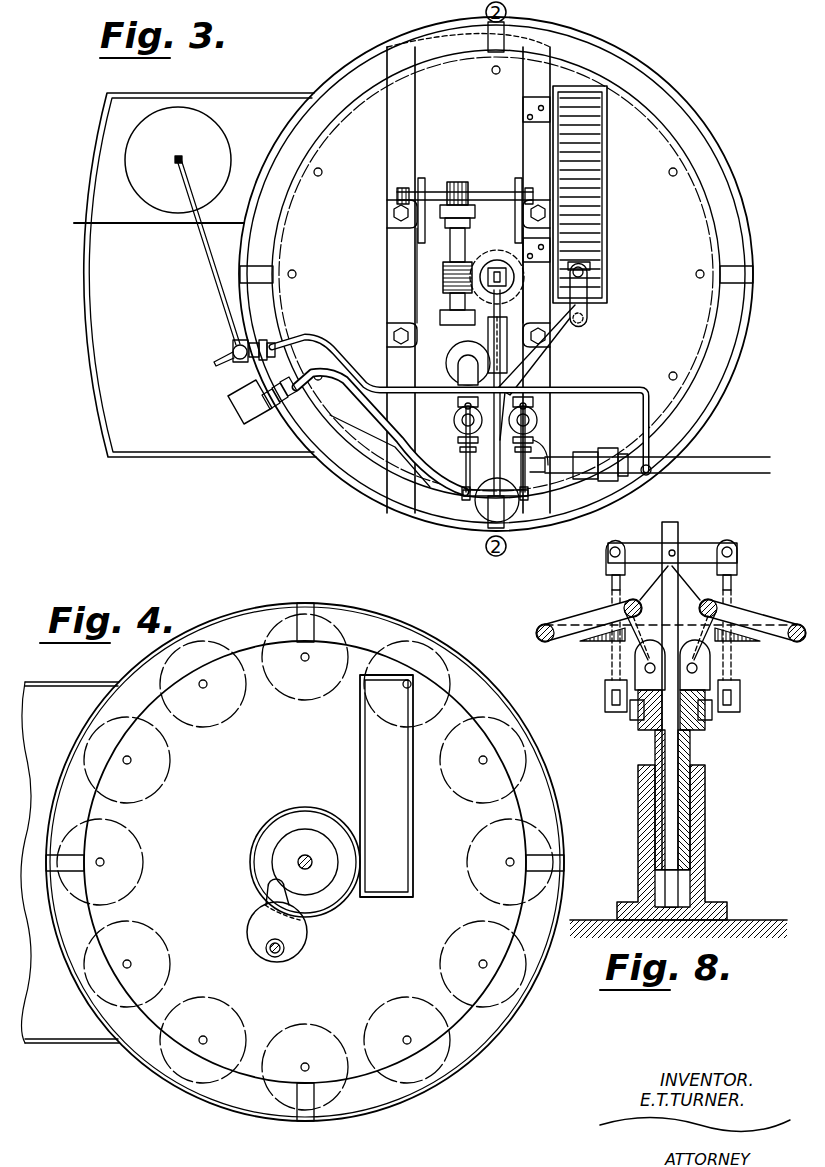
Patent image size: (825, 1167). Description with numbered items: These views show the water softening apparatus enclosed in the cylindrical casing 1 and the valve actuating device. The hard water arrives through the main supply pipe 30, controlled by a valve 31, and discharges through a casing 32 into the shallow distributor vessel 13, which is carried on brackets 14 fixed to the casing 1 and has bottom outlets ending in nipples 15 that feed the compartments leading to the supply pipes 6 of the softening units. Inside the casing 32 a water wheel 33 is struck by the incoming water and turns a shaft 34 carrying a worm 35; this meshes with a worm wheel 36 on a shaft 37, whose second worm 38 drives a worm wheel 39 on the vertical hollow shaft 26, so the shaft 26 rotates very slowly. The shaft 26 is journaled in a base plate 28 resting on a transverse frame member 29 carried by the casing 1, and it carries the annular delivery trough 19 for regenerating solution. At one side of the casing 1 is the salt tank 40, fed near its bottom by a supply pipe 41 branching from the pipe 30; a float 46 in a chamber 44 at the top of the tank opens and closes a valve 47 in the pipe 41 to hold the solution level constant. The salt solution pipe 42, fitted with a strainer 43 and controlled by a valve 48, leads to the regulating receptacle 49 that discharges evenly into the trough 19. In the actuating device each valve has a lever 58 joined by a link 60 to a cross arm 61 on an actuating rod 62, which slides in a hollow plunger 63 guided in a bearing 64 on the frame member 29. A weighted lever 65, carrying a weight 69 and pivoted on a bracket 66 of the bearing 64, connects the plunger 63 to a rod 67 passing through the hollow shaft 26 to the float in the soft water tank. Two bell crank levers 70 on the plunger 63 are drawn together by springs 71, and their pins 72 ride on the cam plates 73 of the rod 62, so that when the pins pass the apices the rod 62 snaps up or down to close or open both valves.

In FIG. 4, the casing 1 is at (443, 654).
In FIG. 4, the supply pipe 6 is at (210, 730).
In FIG. 3, the distributor vessel 13 is at (288, 216).
In FIG. 4, the distributor vessel 13 is at (95, 805).
In FIG. 3, the brackets 14 is at (262, 275).
In FIG. 4, the brackets 14 is at (62, 852).
In FIG. 3, the nipples 15 is at (492, 72).
In FIG. 4, the nipples 15 is at (206, 688).
In FIG. 4, the delivery trough 19 is at (275, 835).
In FIG. 4, the hollow shaft 26 is at (297, 850).
In FIG. 3, the base plate 28 is at (432, 303).
In FIG. 3, the transverse frame member 29 is at (416, 113).
In FIG. 3, the main supply pipe 30 is at (590, 315).
In FIG. 3, the valve 31 is at (538, 416).
In FIG. 3, the casing 32 is at (608, 232).
In FIG. 4, the casing 32 is at (360, 738).
In FIG. 3, the water wheel 33 is at (580, 172).
In FIG. 3, the shaft 34 is at (493, 190).
In FIG. 3, the worm 35 is at (456, 182).
In FIG. 3, the worm wheel 36 is at (500, 200).
In FIG. 3, the shaft 37 is at (452, 248).
In FIG. 3, the second worm 38 is at (443, 285).
In FIG. 3, the worm wheel 39 is at (510, 290).
In FIG. 3, the salt tank 40 is at (92, 398).
In FIG. 4, the salt tank 40 is at (96, 683).
In FIG. 3, the supply pipe 41 is at (330, 350).
In FIG. 3, the salt solution pipe 42 is at (378, 428).
In FIG. 3, the strainer 43 is at (248, 432).
In FIG. 3, the chamber 44 is at (150, 222).
In FIG. 3, the float 46 is at (218, 160).
In FIG. 3, the valve 47 is at (228, 352).
In FIG. 3, the valve 48 is at (455, 416).
In FIG. 3, the receptacle 49 is at (446, 356).
In FIG. 4, the receptacle 49 is at (290, 932).
In FIG. 3, the lever 58 is at (466, 492).
In FIG. 8, the lever 58 is at (616, 712).
In FIG. 8, the link 60 is at (612, 670).
In FIG. 3, the cross arm 61 is at (480, 508).
In FIG. 8, the cross arm 61 is at (696, 550).
In FIG. 3, the actuating rod 62 is at (497, 392).
In FIG. 8, the actuating rod 62 is at (674, 530).
In FIG. 8, the hollow plunger 63 is at (692, 760).
In FIG. 3, the bearing 64 is at (507, 508).
In FIG. 8, the bearing 64 is at (700, 830).
In FIG. 3, the lever 65 is at (530, 387).
In FIG. 8, the lever 65 is at (644, 730).
In FIG. 3, the bracket 66 is at (520, 500).
In FIG. 3, the rod 67 is at (485, 277).
In FIG. 4, the rod 67 is at (308, 853).
In FIG. 3, the weight 69 is at (508, 355).
In FIG. 8, the bell crank levers 70 is at (580, 618).
In FIG. 8, the springs 71 is at (590, 636).
In FIG. 8, the pins 72 is at (720, 606).
In FIG. 8, the cam plates 73 is at (688, 604).